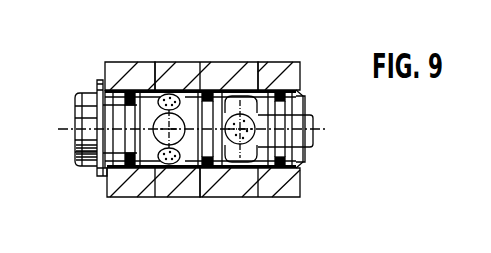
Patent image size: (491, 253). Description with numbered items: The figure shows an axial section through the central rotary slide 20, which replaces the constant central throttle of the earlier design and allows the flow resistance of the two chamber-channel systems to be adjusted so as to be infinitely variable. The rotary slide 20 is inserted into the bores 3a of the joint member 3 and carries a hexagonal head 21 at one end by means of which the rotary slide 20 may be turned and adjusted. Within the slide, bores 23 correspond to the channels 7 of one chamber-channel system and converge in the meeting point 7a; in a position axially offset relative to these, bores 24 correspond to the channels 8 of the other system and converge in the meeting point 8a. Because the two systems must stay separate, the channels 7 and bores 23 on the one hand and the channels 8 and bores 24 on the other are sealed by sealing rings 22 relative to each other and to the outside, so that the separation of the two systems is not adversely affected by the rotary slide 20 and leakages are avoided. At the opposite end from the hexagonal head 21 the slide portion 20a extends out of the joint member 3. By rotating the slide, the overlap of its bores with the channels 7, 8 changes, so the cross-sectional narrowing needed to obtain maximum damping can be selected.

The joint member 3 is at (208, 77).
The bore of the joint member 3a is at (118, 150).
The channel 7 is at (257, 61).
The meeting point 7a is at (254, 116).
The channel 8 is at (165, 68).
The meeting point 8a is at (164, 136).
The rotary slide 20 is at (100, 173).
The shaft end 20a is at (320, 142).
The hexagonal head 21 is at (80, 126).
The sealing ring 22 is at (214, 185).
The bore 23 is at (255, 198).
The bore 24 is at (169, 170).